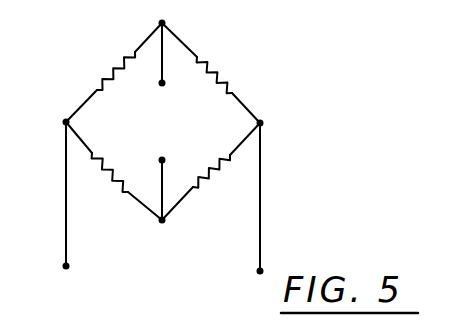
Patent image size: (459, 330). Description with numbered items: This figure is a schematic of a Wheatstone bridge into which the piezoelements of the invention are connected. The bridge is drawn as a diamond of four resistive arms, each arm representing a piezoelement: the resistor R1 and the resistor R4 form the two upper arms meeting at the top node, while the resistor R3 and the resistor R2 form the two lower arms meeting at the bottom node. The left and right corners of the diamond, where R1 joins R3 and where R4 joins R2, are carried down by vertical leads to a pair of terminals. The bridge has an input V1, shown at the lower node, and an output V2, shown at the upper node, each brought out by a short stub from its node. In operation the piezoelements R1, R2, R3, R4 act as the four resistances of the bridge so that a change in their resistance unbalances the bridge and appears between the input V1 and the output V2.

The bridge resistor R1 is at (106, 70).
The bridge resistor R2 is at (212, 178).
The bridge resistor R3 is at (104, 177).
The bridge resistor R4 is at (222, 74).
The input V1 is at (163, 216).
The output V2 is at (164, 82).